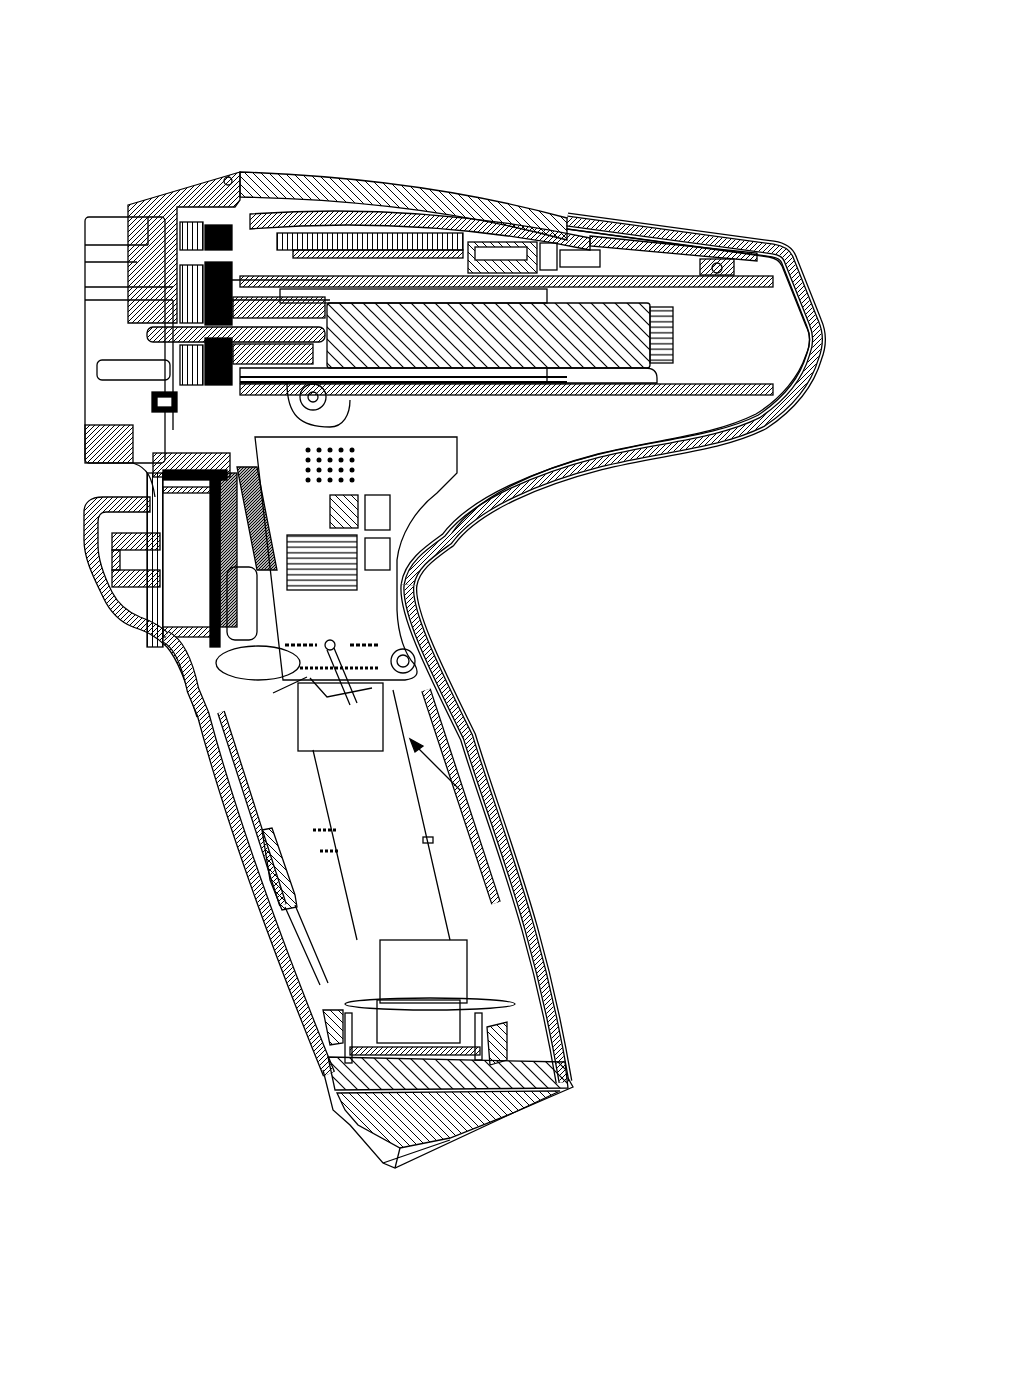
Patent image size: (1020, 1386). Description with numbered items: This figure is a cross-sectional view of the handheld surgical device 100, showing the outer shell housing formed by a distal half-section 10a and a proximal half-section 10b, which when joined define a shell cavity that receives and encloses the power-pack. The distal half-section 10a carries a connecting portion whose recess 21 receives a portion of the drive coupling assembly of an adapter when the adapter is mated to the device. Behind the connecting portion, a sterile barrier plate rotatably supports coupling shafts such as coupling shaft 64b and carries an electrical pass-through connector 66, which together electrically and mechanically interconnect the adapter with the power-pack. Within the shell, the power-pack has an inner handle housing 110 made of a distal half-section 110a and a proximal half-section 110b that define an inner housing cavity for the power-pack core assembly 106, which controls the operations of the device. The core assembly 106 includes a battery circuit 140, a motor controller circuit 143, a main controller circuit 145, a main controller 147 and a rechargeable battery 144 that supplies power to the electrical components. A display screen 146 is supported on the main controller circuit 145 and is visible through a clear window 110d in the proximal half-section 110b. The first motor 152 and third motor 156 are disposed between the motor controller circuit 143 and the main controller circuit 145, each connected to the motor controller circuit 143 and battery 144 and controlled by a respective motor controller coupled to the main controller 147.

The surgical device 100 is at (603, 131).
The distal half-section 10a is at (129, 205).
The proximal half-section 10b is at (462, 205).
The recess 21 is at (112, 332).
The coupling shaft 64b is at (150, 327).
The electrical pass-through connector 66 is at (150, 405).
The power-pack core assembly 106 is at (460, 790).
The inner handle housing 110 is at (505, 193).
The distal half-section 110a is at (280, 958).
The proximal half-section 110b is at (503, 833).
The window 110d is at (726, 253).
The battery circuit 140 is at (397, 623).
The motor controller circuit 143 is at (722, 395).
The rechargeable battery 144 is at (445, 918).
The main controller circuit 145 is at (787, 253).
The display screen 146 is at (690, 259).
The main controller 147 is at (316, 244).
The first motor 152 is at (622, 318).
The third motor 156 is at (623, 380).